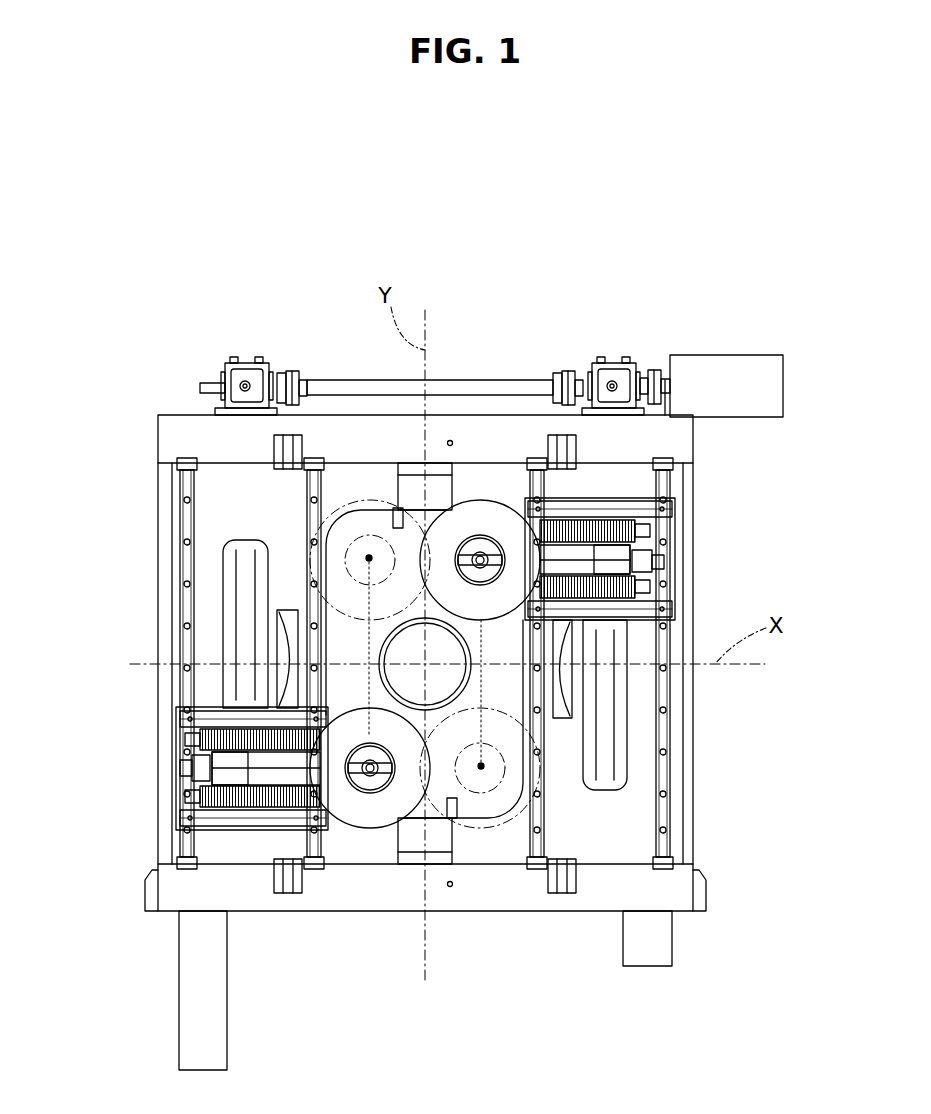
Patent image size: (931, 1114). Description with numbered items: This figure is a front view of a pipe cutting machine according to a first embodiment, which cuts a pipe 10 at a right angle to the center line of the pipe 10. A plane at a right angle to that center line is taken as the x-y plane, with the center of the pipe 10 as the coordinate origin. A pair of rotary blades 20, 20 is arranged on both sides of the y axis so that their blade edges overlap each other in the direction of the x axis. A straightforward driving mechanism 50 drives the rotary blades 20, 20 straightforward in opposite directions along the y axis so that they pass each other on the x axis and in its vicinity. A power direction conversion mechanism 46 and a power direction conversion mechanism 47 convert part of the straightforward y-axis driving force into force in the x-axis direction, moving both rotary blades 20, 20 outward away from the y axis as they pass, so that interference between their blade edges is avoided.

The pipe 10 is at (600, 752).
The rotary blade 20 is at (482, 510).
The power direction conversion mechanism 46 is at (250, 778).
The power direction conversion mechanism 47 is at (284, 652).
The straightforward driving mechanism 50 is at (638, 359).